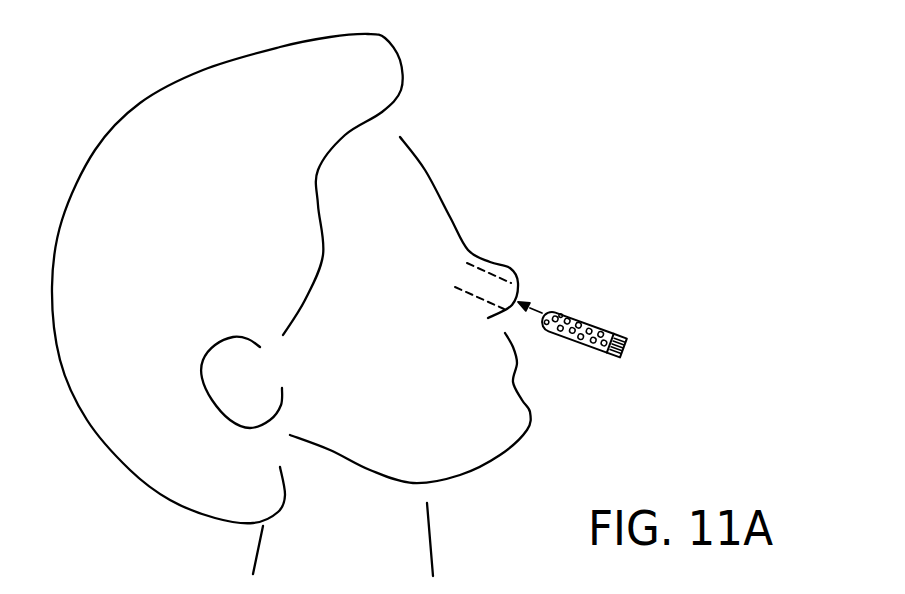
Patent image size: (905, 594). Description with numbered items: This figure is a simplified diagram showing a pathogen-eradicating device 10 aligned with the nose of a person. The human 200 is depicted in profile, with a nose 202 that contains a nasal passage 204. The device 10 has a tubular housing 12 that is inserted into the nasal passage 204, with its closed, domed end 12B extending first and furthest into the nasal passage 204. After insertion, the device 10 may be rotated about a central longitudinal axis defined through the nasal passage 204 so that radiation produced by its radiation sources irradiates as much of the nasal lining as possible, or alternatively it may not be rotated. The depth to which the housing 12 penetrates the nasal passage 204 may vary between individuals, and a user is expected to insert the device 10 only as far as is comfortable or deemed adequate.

The human 200 is at (450, 119).
The nose 202 is at (505, 232).
The nasal passage 204 is at (505, 281).
The device 10 is at (655, 343).
The closed end 12B is at (549, 317).
The tubular housing 12 is at (571, 343).